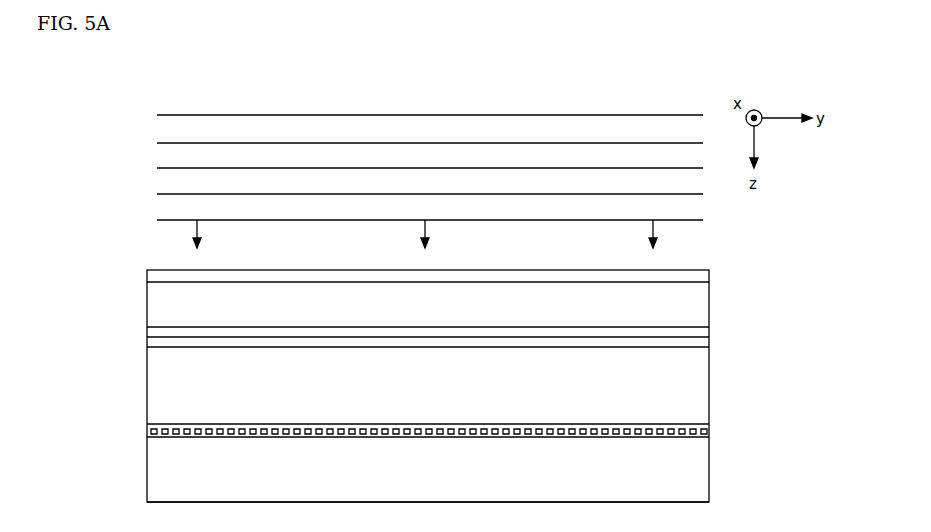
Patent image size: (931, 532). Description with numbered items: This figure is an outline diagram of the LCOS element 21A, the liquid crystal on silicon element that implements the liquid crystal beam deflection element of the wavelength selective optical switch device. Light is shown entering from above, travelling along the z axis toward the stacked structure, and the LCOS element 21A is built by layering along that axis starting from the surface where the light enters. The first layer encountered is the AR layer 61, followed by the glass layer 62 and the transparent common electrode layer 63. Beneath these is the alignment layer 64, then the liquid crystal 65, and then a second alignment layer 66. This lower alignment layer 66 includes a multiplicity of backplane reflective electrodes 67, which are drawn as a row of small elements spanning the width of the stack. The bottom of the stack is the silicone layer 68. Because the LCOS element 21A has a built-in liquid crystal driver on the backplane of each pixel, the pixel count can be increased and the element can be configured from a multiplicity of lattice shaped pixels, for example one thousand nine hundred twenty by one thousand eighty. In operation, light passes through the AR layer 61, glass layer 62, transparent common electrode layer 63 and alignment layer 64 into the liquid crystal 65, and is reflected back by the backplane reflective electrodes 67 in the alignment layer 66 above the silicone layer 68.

The LCOS element 21A is at (798, 264).
The AR layer 61 is at (708, 276).
The glass layer 62 is at (704, 303).
The transparent common electrode layer 63 is at (147, 332).
The alignment layer 64 is at (706, 342).
The liquid crystal 65 is at (158, 372).
The alignment layer 66 is at (708, 431).
The backplane reflective electrodes 67 is at (148, 431).
The silicone layer 68 is at (699, 471).